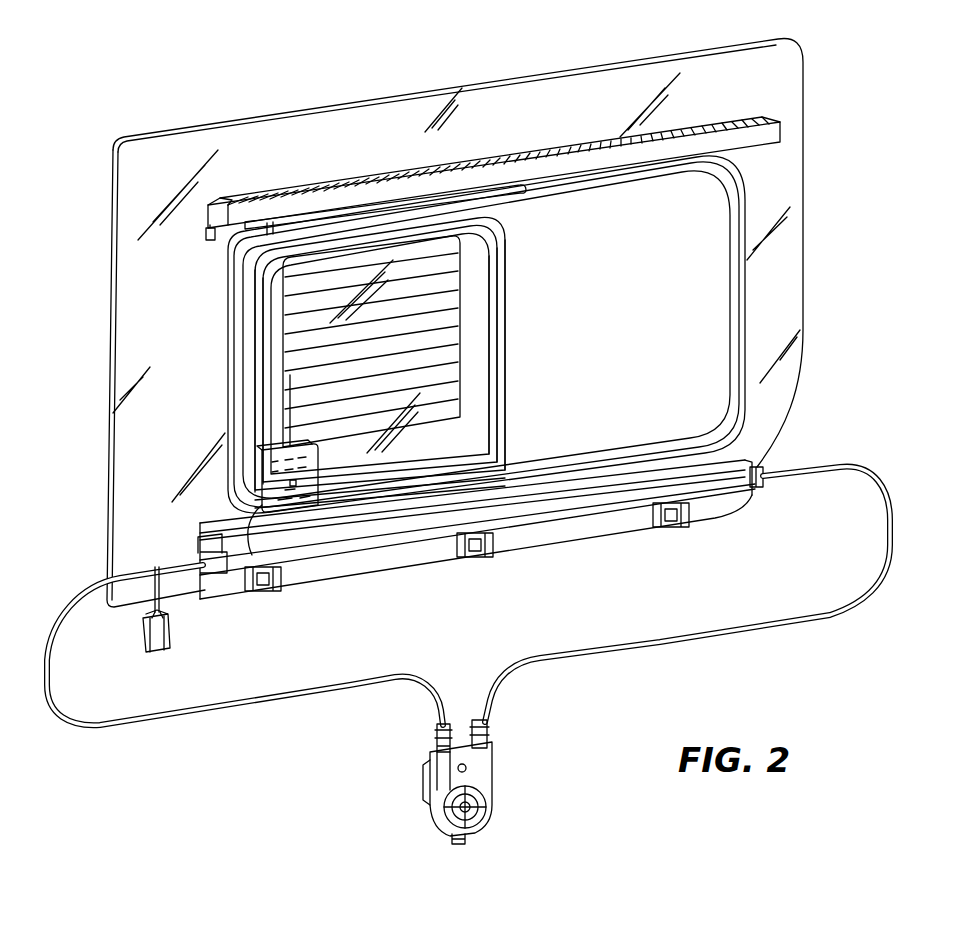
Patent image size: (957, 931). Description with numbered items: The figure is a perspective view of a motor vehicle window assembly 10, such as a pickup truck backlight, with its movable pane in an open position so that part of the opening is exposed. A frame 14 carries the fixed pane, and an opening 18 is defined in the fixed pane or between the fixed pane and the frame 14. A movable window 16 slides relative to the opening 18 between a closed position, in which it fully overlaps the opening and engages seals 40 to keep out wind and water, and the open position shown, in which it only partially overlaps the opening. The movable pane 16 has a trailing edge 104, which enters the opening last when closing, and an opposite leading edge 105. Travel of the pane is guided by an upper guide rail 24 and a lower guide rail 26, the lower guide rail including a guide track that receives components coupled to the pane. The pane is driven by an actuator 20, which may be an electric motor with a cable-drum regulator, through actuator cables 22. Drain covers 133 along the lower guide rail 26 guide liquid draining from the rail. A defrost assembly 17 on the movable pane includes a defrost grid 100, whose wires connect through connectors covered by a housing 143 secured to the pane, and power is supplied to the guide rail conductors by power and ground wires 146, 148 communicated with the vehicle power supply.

The window assembly 10 is at (825, 73).
The frame 14 is at (790, 178).
The movable window pane 16 is at (322, 300).
The defrost assembly 17 is at (237, 495).
The opening 18 is at (690, 317).
The actuator 20 is at (480, 807).
The actuator cables 22 is at (235, 705).
The upper guide rail 24 is at (772, 135).
The lower guide rail 26 is at (740, 456).
The seals 40 is at (742, 268).
The defrost grid 100 is at (440, 338).
The trailing edge 104 is at (230, 346).
The leading edge 105 is at (510, 272).
The drain covers 133 is at (470, 555).
The housing 143 is at (270, 468).
The power wire 146 is at (153, 585).
The ground wire 148 is at (162, 585).